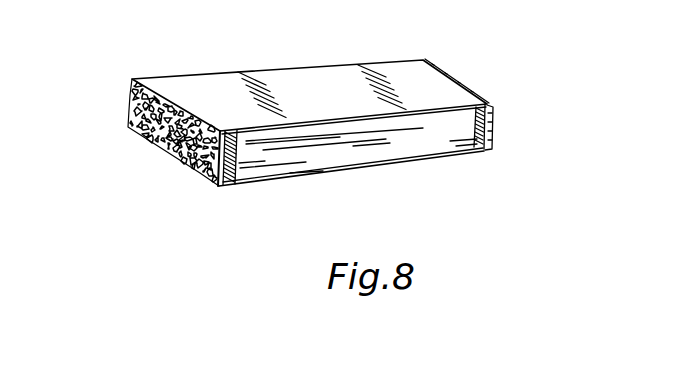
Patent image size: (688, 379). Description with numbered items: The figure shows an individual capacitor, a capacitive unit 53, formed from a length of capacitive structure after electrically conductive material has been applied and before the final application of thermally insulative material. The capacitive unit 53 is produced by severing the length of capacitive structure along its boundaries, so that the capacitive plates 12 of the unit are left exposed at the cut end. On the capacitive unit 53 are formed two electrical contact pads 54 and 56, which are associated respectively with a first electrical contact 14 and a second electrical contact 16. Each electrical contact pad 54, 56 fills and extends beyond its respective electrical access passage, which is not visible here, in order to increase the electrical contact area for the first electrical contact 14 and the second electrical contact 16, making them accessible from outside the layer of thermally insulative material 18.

The capacitive unit 53 is at (315, 50).
The electrical contact pad 54 is at (160, 144).
The first electrical contact 14 is at (226, 186).
The second electrical contact 16 is at (484, 149).
The electrical contact pad 56 is at (493, 121).
The capacitive plates 12 is at (417, 142).
The thermally insulative material 18 is at (337, 171).